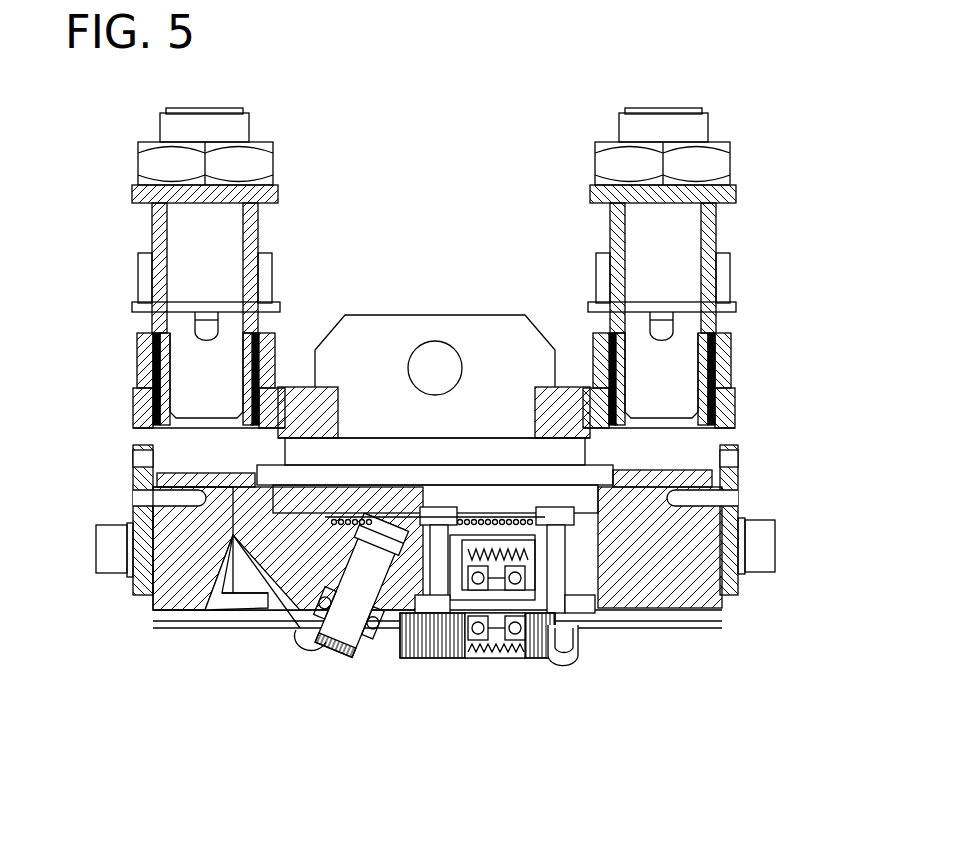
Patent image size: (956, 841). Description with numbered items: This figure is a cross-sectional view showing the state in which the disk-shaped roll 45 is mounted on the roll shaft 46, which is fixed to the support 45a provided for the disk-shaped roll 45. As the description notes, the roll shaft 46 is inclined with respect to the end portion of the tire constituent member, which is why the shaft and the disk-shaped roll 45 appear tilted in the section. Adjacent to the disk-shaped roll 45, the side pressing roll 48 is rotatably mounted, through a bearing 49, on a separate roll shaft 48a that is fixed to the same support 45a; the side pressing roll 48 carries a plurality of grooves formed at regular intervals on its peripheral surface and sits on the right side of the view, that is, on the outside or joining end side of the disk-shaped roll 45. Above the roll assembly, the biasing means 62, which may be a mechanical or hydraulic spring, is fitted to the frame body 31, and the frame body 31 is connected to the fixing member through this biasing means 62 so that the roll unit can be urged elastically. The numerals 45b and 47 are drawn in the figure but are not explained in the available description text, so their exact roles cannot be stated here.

The frame body 31 is at (138, 478).
The disk-shaped roll 45 is at (421, 648).
The support 45a is at (178, 596).
The housing bottom portion 45b is at (378, 662).
The roll shaft 46 is at (297, 650).
The shaft bore 47 is at (292, 622).
The side pressing roll 48 is at (512, 655).
The roll shaft 48a is at (553, 662).
The bearing 49 is at (528, 558).
The biasing means 62 is at (125, 282).